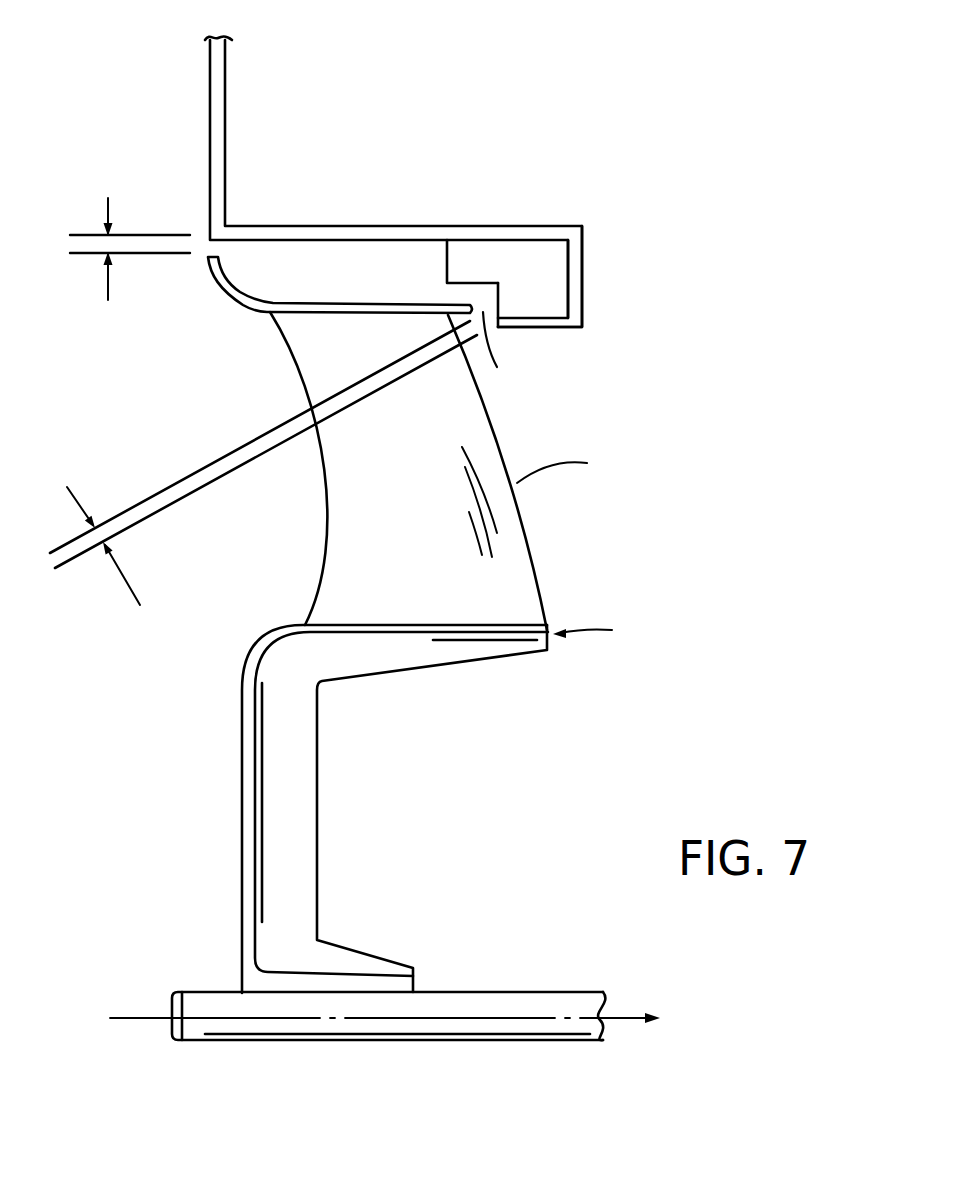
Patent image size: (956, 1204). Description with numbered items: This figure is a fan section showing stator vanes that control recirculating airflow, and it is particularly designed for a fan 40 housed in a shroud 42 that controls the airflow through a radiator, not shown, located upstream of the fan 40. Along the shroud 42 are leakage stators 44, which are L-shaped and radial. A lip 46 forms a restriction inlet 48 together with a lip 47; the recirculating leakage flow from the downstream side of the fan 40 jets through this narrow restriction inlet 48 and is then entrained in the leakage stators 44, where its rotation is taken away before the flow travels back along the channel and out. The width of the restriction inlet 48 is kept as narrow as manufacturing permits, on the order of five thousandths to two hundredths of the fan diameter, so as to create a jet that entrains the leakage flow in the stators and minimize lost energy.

The fan 40 is at (183, 664).
The shroud 42 is at (222, 90).
The leakage stators 44 is at (552, 282).
The lip 46 is at (462, 305).
The lip 47 is at (494, 320).
The restriction inlet 48 is at (510, 358).